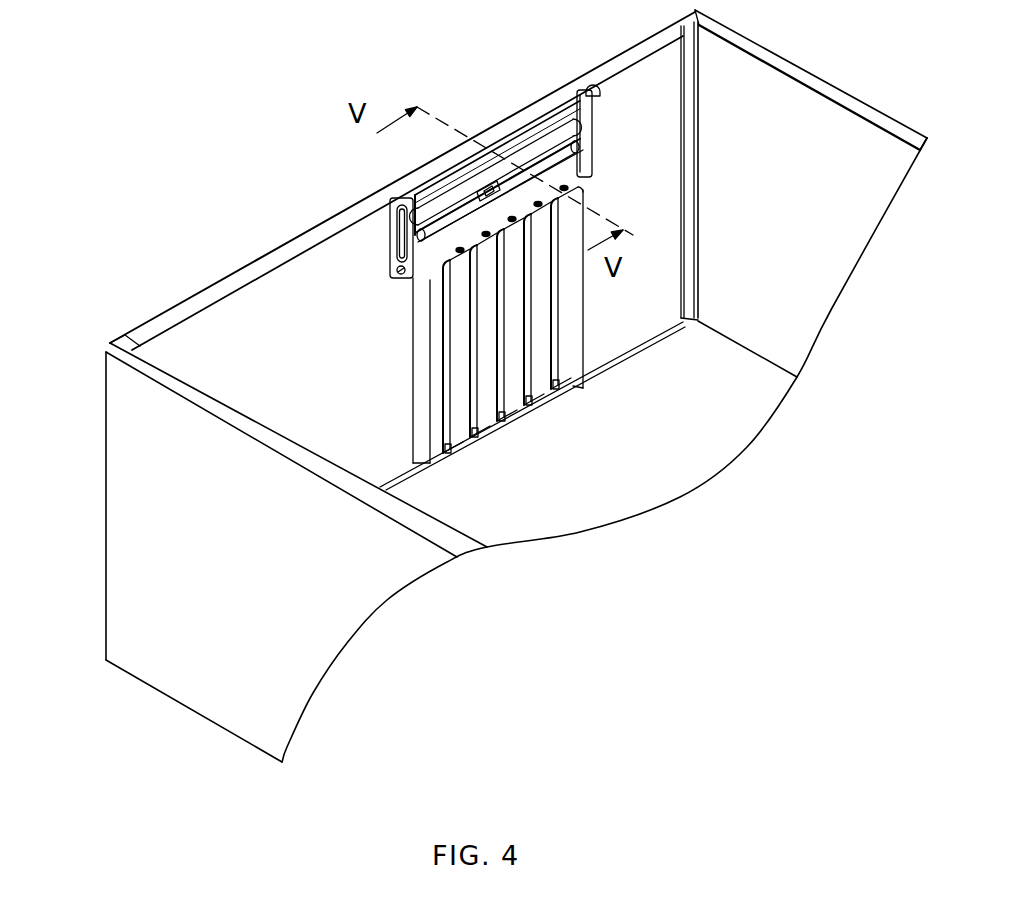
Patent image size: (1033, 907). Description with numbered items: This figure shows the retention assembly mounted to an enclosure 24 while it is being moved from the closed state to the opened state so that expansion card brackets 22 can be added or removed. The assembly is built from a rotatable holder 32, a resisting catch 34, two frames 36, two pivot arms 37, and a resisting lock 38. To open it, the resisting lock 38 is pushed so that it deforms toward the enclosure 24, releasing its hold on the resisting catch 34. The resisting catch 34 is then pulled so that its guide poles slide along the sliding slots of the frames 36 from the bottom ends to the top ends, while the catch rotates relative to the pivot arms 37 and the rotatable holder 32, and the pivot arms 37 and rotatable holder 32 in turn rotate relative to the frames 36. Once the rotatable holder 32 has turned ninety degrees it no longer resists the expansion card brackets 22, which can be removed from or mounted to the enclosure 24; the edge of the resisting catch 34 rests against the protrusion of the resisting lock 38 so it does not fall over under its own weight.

The expansion card bracket 22 is at (562, 352).
The enclosure 24 is at (733, 100).
The rotatable holder 32 is at (573, 165).
The resisting catch 34 is at (443, 197).
The frame 36 is at (600, 90).
The pivot arm 37 is at (403, 233).
The resisting lock 38 is at (503, 188).